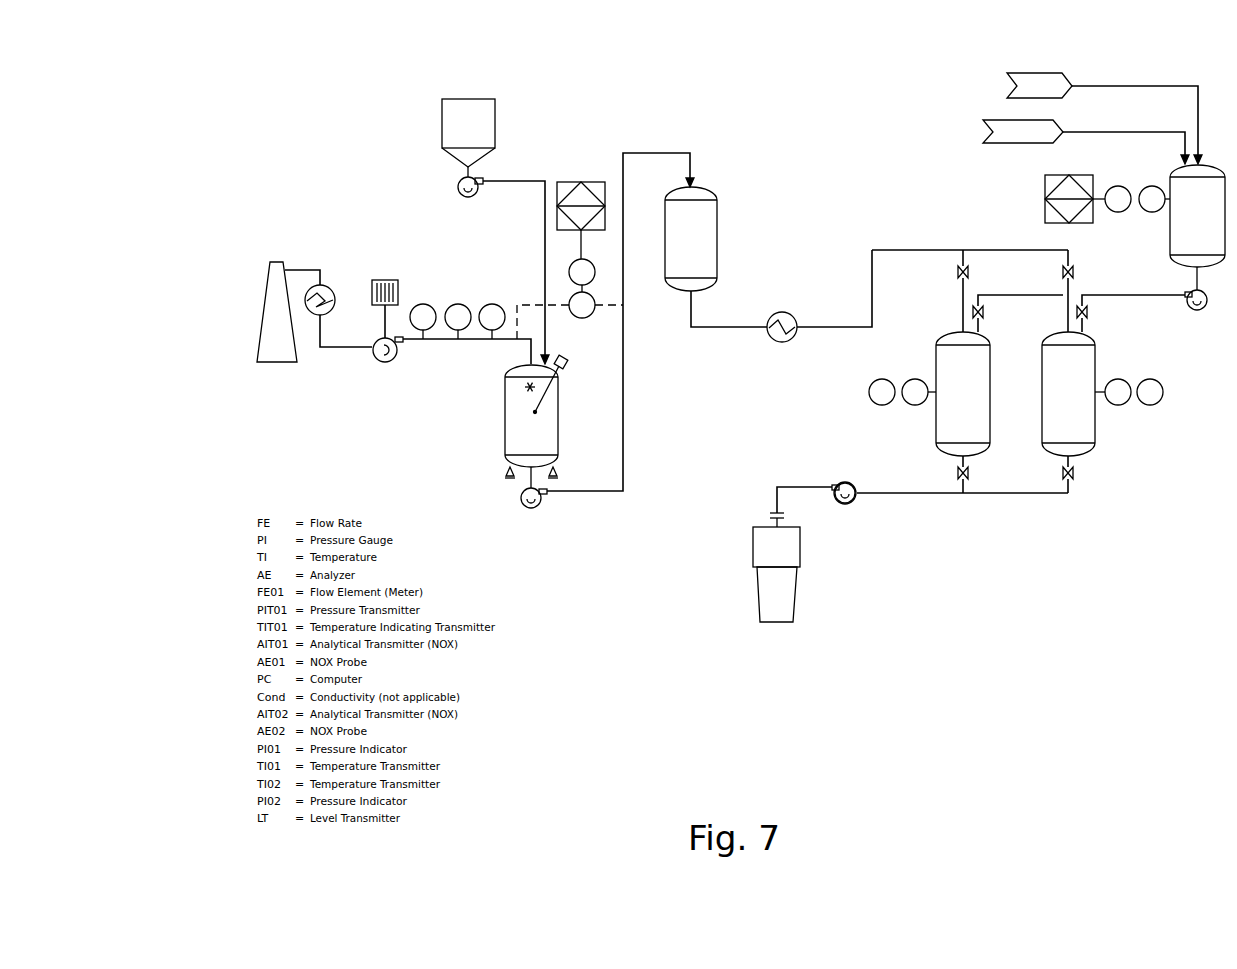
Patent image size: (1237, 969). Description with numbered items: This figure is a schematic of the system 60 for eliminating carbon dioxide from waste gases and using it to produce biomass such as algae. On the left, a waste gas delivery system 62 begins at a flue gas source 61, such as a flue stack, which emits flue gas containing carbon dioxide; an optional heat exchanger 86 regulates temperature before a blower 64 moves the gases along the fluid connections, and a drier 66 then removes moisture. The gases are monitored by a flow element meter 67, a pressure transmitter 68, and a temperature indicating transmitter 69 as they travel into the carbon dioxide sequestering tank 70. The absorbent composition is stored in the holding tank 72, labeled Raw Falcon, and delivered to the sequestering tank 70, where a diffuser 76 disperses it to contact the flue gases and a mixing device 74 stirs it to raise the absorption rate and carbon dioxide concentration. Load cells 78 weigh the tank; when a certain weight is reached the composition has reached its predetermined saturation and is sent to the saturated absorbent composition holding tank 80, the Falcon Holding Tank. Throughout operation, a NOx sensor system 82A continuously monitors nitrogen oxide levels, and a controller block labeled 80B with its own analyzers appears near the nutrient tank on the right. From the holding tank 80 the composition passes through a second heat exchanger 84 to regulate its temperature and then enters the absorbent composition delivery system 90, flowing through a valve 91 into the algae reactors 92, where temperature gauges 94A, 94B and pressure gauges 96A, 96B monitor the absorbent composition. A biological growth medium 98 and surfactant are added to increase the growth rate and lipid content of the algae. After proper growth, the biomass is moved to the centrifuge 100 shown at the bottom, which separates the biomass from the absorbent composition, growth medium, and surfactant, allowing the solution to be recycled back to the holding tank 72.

The system for eliminating carbon dioxide from waste gases 60 is at (365, 135).
The flue gas source 61 is at (257, 315).
The waste gas delivery system 62 is at (345, 354).
The blower 64 is at (371, 396).
The drier 66 is at (370, 282).
The flow element meter 67 is at (433, 306).
The pressure transmitter 68 is at (467, 306).
The temperature indicating transmitter 69 is at (498, 306).
The carbon dioxide sequestering tank 70 is at (560, 430).
The holding tank (Raw Falcon) 72 is at (497, 118).
The mixing device 74 is at (555, 382).
The diffuser 76 is at (530, 393).
The load cells 78 is at (555, 480).
The saturated absorbent composition holding tank (Falcon Holding Tank) 80 is at (710, 188).
The NOx sensor system 82A is at (557, 178).
The second heat exchanger 84 is at (791, 312).
The heat exchanger 86 is at (314, 287).
The absorbent composition delivery system 90 is at (914, 137).
The valve 91 is at (1066, 266).
The algae reactors 92 is at (990, 437).
The temperature gauge 94A is at (1127, 383).
The temperature gauge 94B is at (905, 403).
The pressure gauge 96A is at (1160, 383).
The pressure gauge 96B is at (873, 401).
The biological growth medium 98 is at (1062, 124).
The controller (PLC) 80B is at (1094, 182).
The centrifuge 100 is at (793, 617).